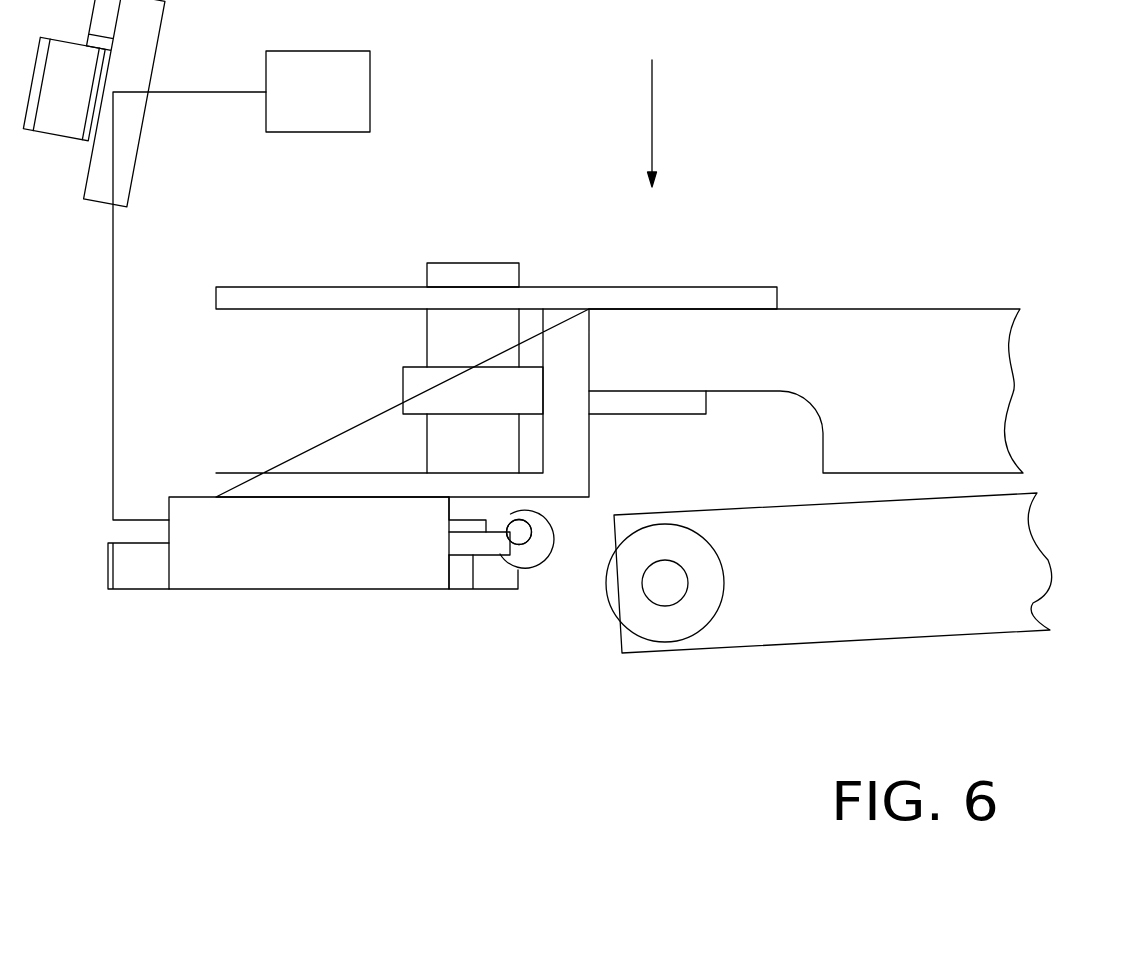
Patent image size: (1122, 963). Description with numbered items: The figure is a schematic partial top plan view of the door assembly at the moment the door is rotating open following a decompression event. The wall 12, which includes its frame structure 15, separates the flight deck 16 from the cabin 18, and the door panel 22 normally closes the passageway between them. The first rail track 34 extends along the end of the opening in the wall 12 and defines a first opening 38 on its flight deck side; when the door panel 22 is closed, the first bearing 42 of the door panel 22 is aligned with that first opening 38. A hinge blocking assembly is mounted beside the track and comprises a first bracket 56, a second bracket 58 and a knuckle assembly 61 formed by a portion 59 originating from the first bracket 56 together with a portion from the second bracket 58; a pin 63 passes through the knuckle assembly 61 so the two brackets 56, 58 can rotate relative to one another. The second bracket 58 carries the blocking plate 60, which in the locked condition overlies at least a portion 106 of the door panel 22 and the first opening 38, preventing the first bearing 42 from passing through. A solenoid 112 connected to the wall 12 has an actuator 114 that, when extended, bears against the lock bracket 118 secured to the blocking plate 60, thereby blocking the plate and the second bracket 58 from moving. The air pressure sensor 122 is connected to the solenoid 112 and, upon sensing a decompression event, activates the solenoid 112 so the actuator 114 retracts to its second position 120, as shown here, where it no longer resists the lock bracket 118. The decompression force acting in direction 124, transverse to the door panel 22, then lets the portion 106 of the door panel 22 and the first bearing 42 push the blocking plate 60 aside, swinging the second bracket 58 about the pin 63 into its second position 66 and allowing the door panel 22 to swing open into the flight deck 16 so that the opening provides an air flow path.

The wall 12 is at (265, 265).
The frame structure 15 is at (237, 480).
The flight deck 16 is at (733, 797).
The cabin 18 is at (565, 152).
The door panel 22 is at (930, 613).
The first rail track 34 is at (968, 382).
The first opening 38 is at (792, 392).
The first bearing 42 is at (683, 627).
The first bracket 56 is at (463, 507).
The second bracket 58 is at (536, 570).
The portion 59 is at (537, 543).
The blocking plate 60 is at (537, 803).
The knuckle assembly 61 is at (526, 500).
The pin 63 is at (523, 535).
The second position 66 is at (488, 655).
The portion of door panel 106 is at (681, 672).
The solenoid 112 is at (215, 565).
The actuator 114 is at (460, 543).
The lock bracket 118 is at (470, 762).
The second position 120 is at (493, 502).
The air pressure sensor 122 is at (352, 98).
The direction 124 is at (652, 118).